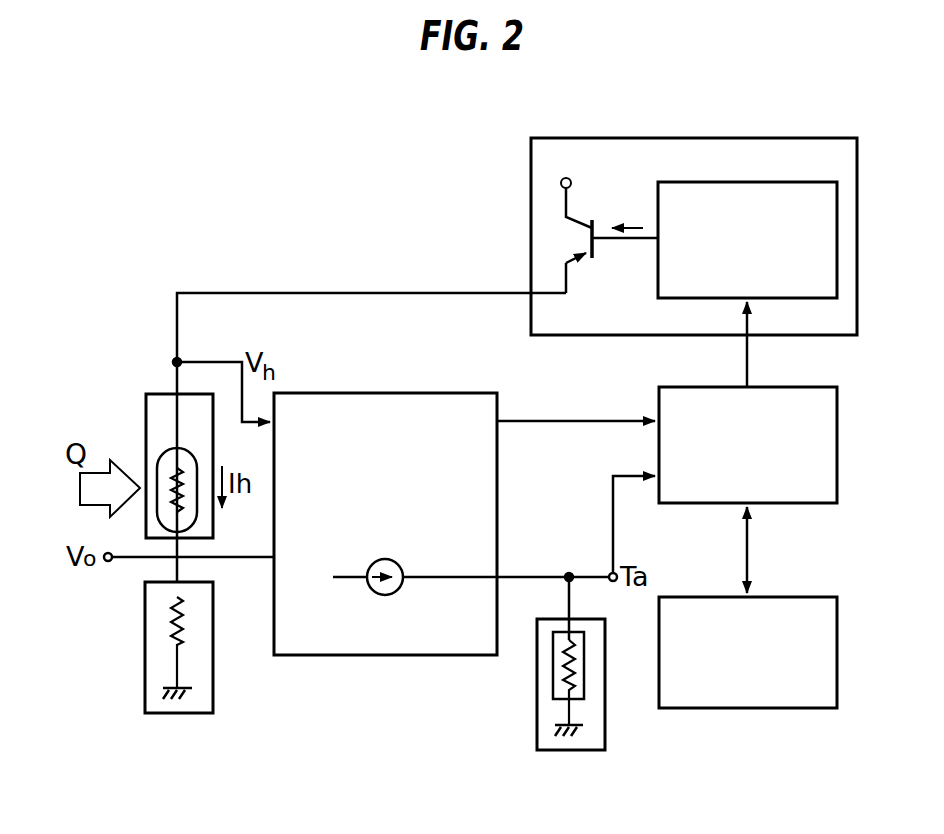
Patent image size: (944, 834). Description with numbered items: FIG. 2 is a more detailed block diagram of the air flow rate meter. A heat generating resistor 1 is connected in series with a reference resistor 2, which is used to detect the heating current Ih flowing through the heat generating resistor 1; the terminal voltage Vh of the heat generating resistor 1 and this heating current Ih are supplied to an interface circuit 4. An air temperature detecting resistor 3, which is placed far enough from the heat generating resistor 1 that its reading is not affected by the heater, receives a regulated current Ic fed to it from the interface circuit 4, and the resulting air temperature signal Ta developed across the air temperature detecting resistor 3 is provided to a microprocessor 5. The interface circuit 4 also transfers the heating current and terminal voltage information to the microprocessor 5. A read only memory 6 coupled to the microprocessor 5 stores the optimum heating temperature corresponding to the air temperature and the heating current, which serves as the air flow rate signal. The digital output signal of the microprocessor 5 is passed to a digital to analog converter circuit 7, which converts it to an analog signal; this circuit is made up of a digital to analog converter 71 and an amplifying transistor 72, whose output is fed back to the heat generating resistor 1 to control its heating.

The heat generating resistor 1 is at (146, 437).
The reference resistor 2 is at (145, 643).
The air temperature detecting resistor 3 is at (553, 683).
The interface circuit 4 is at (397, 655).
The microprocessor 5 is at (783, 387).
The read only memory (ROM) 6 is at (783, 597).
The digital to analog converter circuit 7 is at (768, 138).
The digital to analog converter 71 is at (785, 182).
The amplifying transistor 72 is at (574, 233).